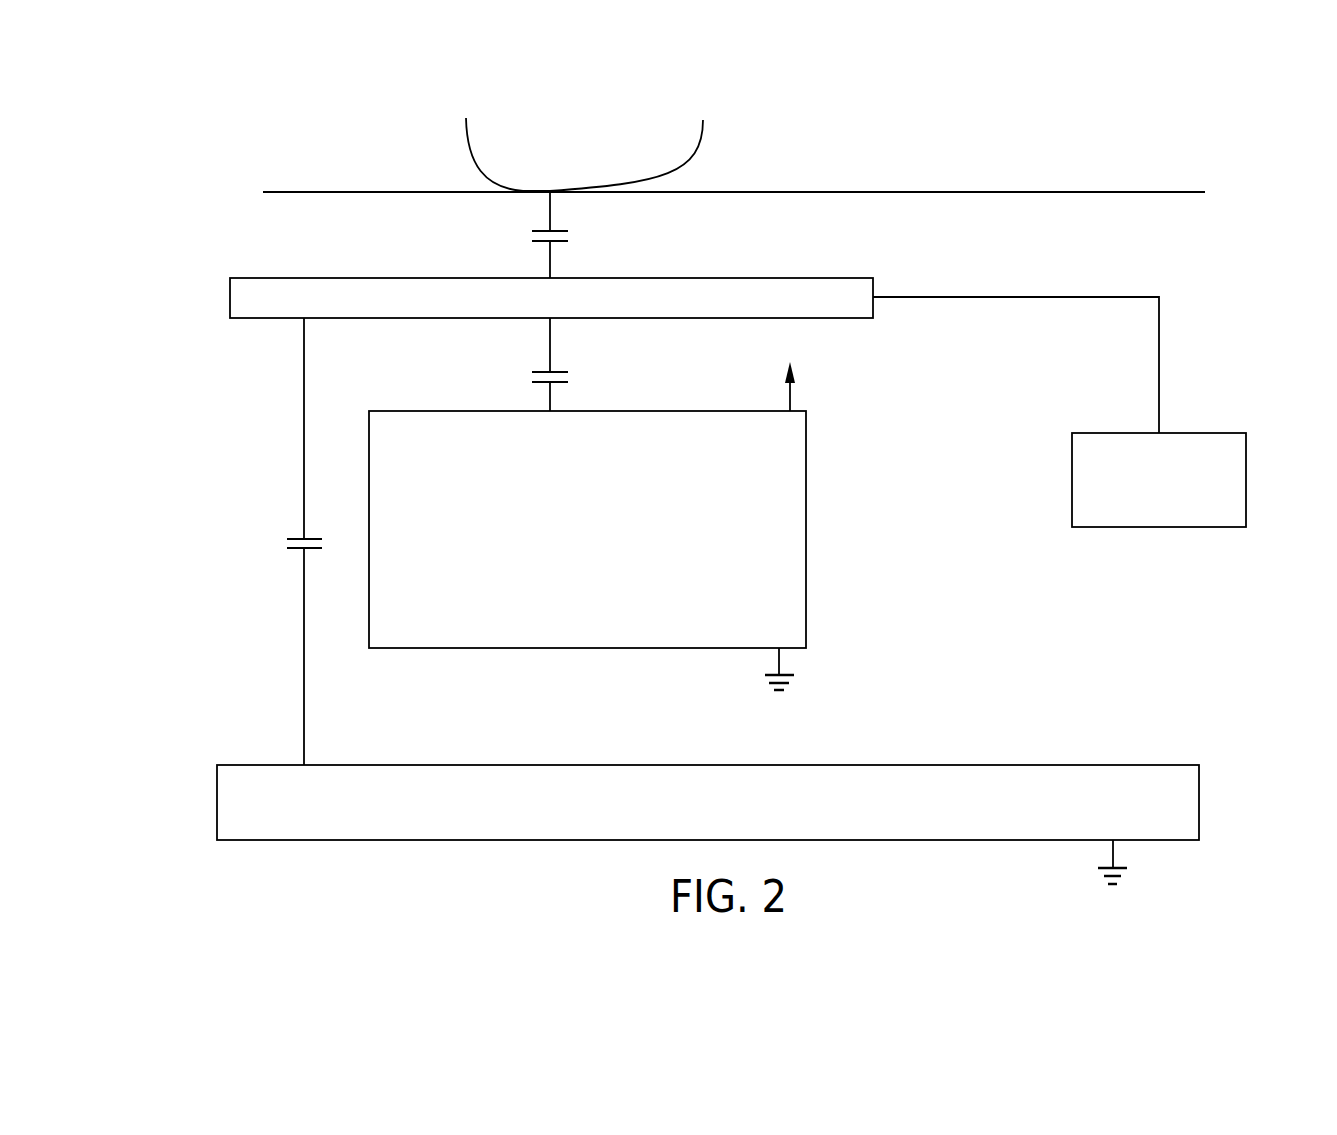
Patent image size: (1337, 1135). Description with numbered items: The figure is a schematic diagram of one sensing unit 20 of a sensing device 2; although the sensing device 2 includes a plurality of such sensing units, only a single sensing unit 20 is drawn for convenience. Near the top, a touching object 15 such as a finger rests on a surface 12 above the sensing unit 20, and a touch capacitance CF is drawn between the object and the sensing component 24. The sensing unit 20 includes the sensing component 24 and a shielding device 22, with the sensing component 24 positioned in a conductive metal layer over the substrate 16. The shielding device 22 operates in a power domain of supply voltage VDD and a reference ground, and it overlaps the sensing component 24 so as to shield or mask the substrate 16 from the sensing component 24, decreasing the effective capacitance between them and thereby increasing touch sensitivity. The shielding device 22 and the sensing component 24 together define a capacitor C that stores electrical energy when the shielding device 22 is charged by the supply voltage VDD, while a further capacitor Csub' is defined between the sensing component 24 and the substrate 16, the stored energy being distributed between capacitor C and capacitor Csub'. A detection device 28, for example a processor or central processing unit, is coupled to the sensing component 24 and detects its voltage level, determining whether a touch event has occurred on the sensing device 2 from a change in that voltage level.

The sensing device 2 is at (166, 145).
The sensing unit 20 is at (273, 243).
The finger 15 is at (705, 140).
The touch surface / cover 12 is at (953, 190).
The touch capacitance CF is at (568, 237).
The sensing component 24 is at (831, 310).
The capacitor C is at (568, 378).
The supply voltage VDD is at (789, 373).
The shielding device 22 is at (806, 434).
The capacitor Csub' is at (252, 541).
The detection device 28 is at (1246, 478).
The substrate 16 is at (1153, 825).